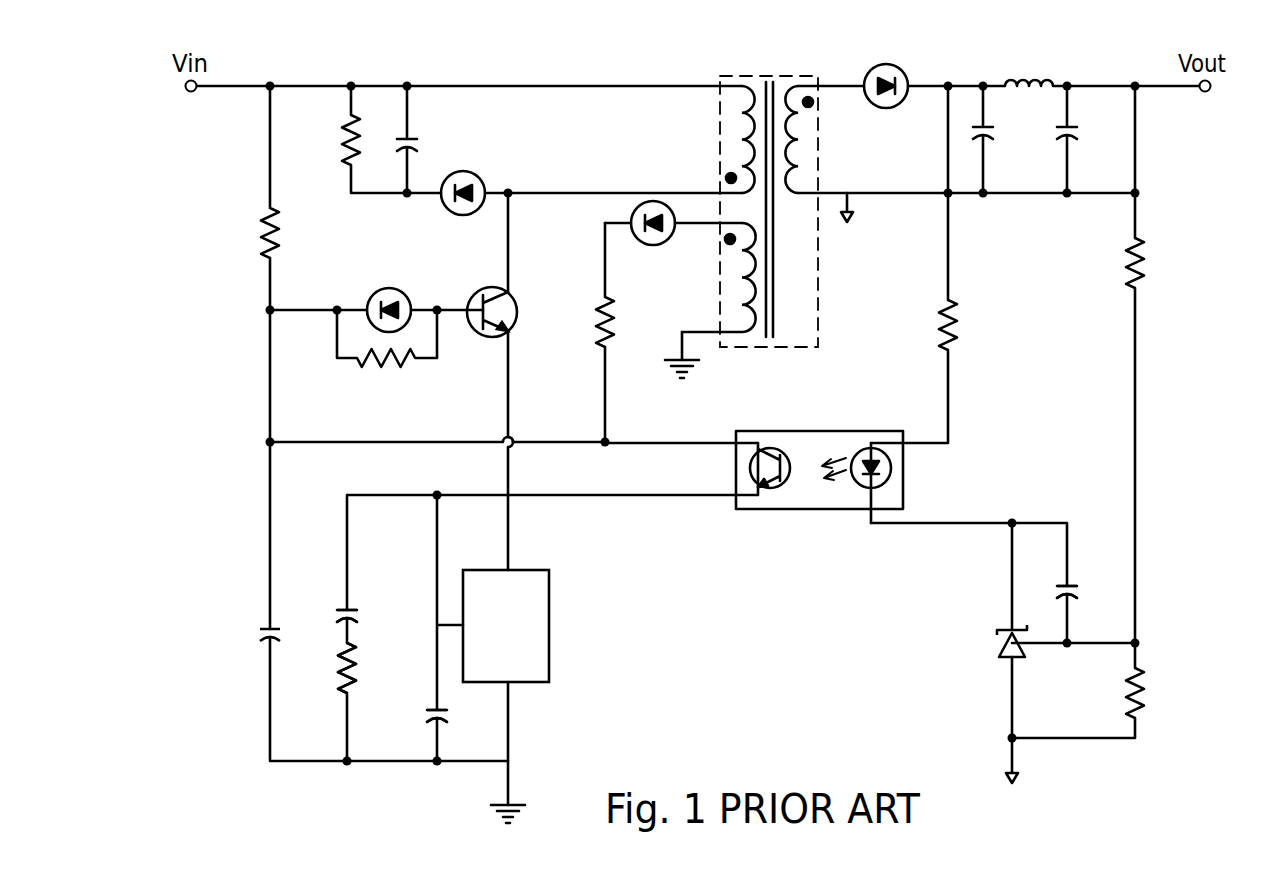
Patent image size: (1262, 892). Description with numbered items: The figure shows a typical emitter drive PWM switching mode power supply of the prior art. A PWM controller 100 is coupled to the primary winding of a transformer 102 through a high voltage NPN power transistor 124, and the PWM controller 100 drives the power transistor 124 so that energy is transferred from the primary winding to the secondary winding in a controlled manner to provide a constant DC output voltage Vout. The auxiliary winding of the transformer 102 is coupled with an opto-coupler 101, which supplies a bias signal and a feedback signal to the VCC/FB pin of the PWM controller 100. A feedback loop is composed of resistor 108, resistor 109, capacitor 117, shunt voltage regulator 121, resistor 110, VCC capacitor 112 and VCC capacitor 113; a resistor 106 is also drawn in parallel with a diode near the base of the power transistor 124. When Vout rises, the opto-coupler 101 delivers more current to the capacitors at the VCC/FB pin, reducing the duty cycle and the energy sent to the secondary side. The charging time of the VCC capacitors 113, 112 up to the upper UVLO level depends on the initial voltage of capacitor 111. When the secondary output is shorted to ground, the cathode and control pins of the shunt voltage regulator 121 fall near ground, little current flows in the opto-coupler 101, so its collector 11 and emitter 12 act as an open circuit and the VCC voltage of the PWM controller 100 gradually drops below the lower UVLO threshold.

The PWM controller 100 is at (537, 645).
The opto-coupler 101 is at (835, 498).
The transformer 102 is at (806, 286).
The resistor 106 is at (393, 366).
The feedback loop component 108 is at (1145, 268).
The feedback loop component 109 is at (1140, 690).
The feedback loop component 110 is at (345, 672).
The capacitor 111 is at (262, 627).
The VCC capacitor 112 is at (340, 610).
The VCC capacitor 113 is at (432, 710).
The feedback loop component 117 is at (1077, 588).
The shunt voltage regulator 121 is at (997, 647).
The power transistor 124 is at (508, 313).
The collector 11 is at (695, 443).
The emitter 12 is at (695, 497).